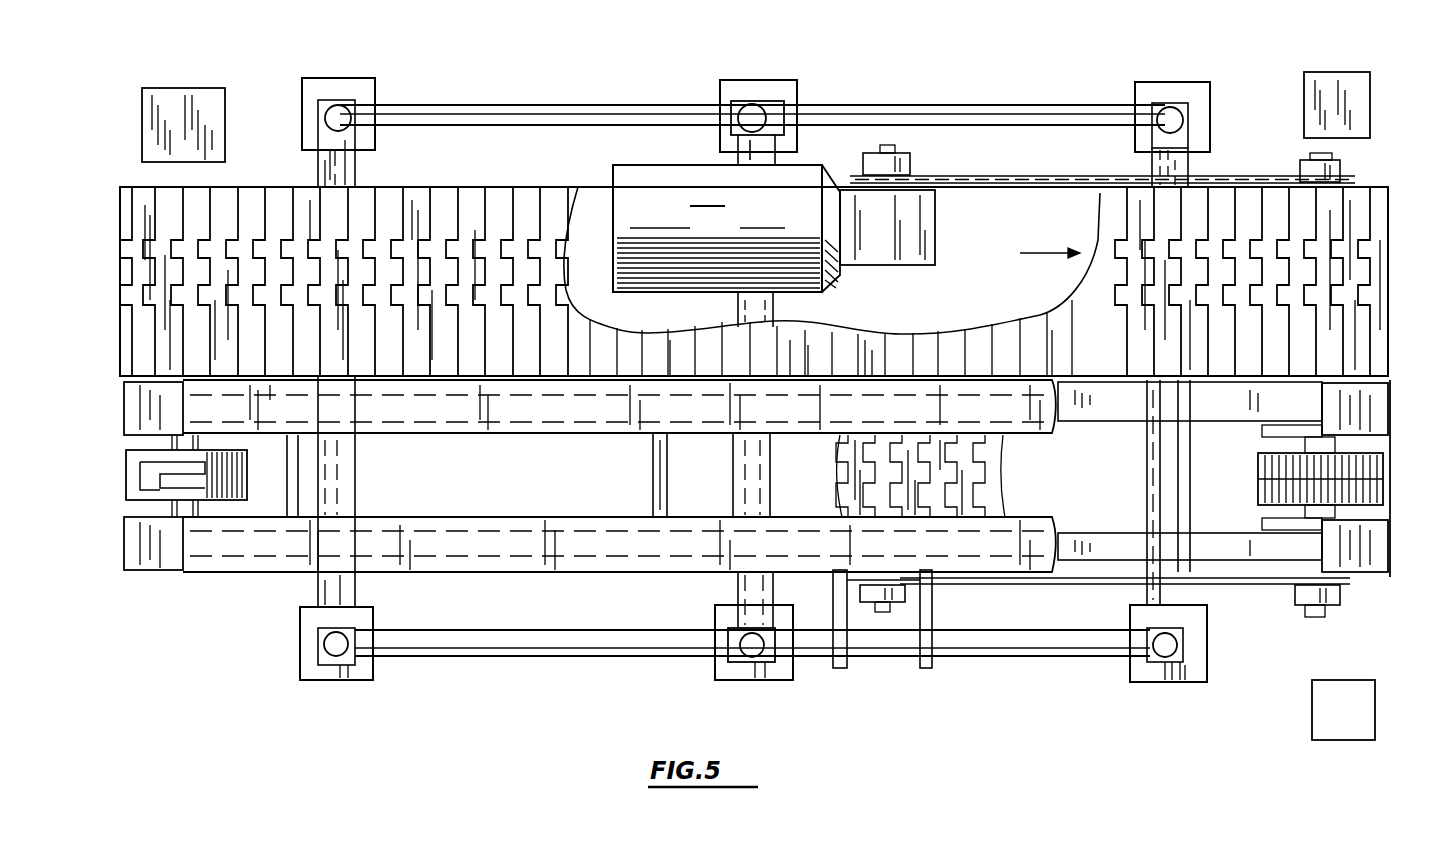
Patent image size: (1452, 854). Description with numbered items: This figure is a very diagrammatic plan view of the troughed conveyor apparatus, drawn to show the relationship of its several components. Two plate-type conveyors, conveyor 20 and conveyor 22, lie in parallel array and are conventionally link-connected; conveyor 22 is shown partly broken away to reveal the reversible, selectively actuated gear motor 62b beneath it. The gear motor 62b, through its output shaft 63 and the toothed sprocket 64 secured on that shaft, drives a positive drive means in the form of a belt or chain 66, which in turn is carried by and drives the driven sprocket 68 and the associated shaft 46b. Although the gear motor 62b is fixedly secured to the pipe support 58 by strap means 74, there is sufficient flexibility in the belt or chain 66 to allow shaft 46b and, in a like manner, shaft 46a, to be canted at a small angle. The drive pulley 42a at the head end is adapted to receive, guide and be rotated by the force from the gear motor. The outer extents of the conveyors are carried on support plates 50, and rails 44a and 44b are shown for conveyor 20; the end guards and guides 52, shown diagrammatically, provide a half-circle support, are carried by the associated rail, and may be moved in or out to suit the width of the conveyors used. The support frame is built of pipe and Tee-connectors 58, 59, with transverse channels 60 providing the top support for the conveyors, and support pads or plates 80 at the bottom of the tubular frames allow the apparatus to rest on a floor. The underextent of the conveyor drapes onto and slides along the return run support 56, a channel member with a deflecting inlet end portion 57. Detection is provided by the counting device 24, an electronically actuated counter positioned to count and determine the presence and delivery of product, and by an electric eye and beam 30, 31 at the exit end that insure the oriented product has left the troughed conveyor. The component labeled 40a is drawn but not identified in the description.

The conveyor 20 is at (993, 473).
The conveyor 22 is at (1112, 205).
The counting device 24 is at (192, 93).
The electric eye 30 is at (1340, 80).
The beam 31 is at (1330, 705).
The drive unit 40a is at (130, 470).
The drive pulley 42a is at (1358, 497).
The rail 44a is at (1115, 512).
The rail 44b is at (1130, 412).
The shaft 46a is at (1326, 611).
The shaft 46b is at (1306, 160).
The support plate 50 is at (455, 517).
The end guards and guides 52 is at (135, 412).
The return run support 56 is at (1192, 511).
The deflecting inlet end portion 57 is at (1200, 440).
The pipe support 58 is at (555, 108).
The Tee-connector 59 is at (720, 628).
The transverse channel 60 is at (352, 162).
The gear motor 62b is at (774, 246).
The output shaft 63 is at (892, 146).
The toothed sprocket 64 is at (880, 153).
The belt or chain 66 is at (970, 178).
The driven sprocket 68 is at (1342, 172).
The strap means 74 is at (930, 670).
The support pad 80 is at (790, 95).